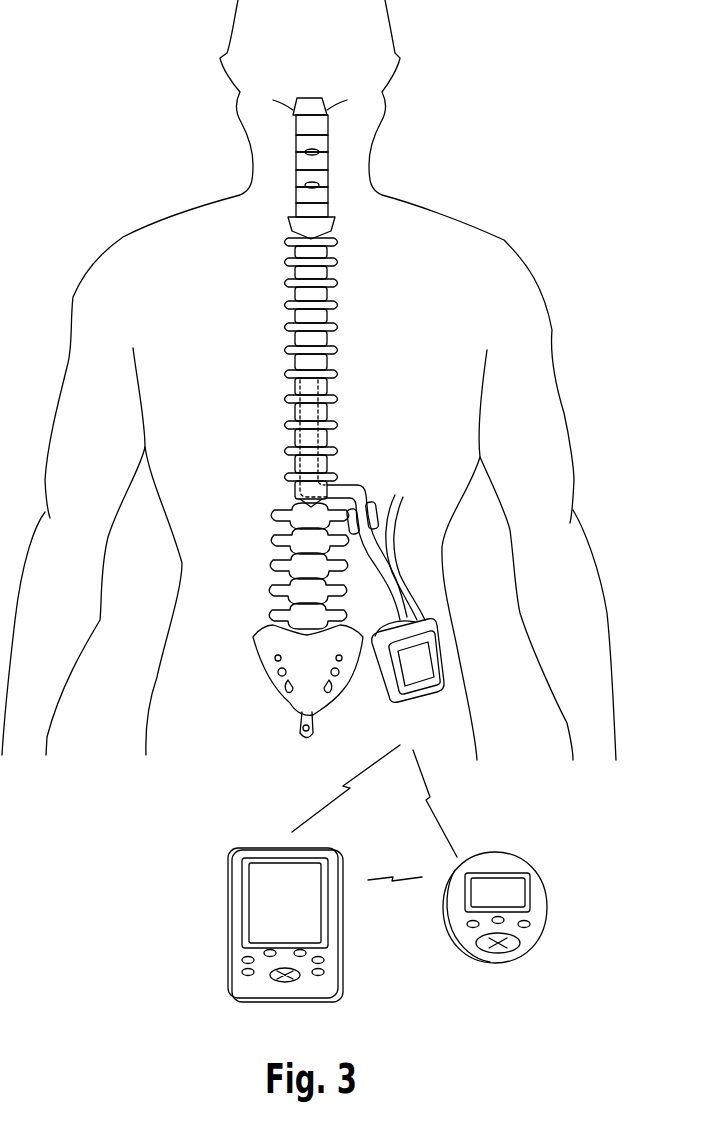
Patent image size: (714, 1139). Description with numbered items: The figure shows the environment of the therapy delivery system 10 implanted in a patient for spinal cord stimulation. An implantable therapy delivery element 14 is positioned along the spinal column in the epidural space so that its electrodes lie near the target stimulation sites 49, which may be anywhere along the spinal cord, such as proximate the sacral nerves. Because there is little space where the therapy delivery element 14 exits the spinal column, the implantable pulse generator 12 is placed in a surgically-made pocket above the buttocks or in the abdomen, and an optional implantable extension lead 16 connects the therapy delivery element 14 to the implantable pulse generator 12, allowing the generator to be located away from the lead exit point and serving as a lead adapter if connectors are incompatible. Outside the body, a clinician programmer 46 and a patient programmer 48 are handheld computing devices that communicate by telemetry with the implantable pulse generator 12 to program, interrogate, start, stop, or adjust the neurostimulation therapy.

The therapy delivery system 10 is at (429, 465).
The implantable pulse generator 12 is at (436, 625).
The implantable therapy delivery element 14 is at (292, 435).
The implantable extension lead 16 is at (386, 550).
The target stimulation sites 49 is at (340, 423).
The clinician programmer 46 is at (233, 904).
The patient programmer 48 is at (540, 890).